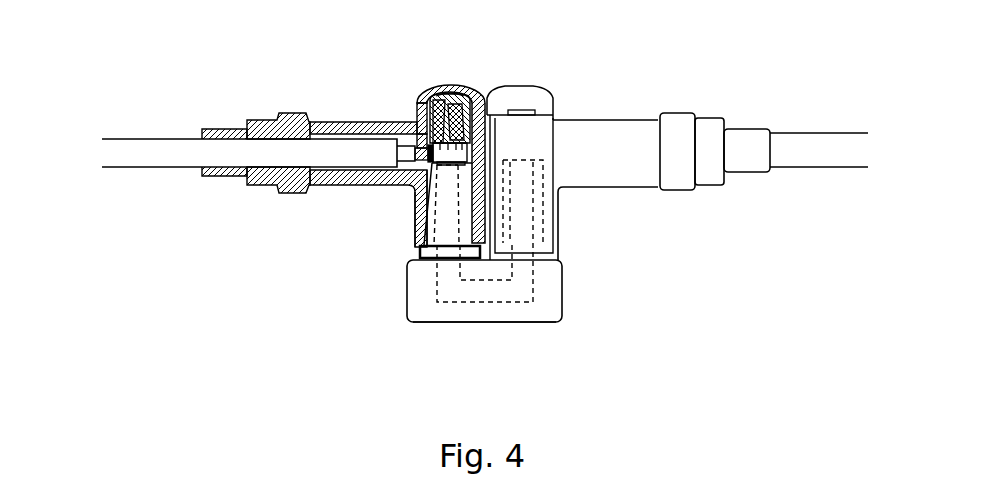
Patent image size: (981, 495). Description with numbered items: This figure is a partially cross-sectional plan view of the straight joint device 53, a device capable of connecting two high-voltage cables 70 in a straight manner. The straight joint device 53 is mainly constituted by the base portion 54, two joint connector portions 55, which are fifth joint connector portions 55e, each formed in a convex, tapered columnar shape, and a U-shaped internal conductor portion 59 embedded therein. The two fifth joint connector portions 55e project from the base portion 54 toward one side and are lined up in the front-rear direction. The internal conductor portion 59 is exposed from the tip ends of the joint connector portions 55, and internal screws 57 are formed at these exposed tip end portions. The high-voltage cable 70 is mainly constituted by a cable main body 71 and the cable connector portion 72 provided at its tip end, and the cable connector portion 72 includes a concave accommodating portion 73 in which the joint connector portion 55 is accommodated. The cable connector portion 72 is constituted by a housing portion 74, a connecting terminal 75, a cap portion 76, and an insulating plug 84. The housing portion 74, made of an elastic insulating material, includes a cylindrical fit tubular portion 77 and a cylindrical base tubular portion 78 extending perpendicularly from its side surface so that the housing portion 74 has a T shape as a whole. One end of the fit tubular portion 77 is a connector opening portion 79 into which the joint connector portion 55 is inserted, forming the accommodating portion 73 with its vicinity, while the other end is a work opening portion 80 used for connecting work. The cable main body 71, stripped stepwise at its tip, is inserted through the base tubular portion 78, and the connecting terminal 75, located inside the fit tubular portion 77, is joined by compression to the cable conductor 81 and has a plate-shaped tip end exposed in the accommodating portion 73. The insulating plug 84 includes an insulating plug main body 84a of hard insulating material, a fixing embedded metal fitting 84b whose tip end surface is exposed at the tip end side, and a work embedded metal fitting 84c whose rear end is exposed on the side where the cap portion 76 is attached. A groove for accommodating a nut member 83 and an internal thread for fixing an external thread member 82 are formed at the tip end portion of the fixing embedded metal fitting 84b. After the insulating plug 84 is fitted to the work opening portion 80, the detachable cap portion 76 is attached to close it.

The high-voltage cable 70 is at (140, 136).
The cable main body 71 is at (163, 146).
The base tubular portion 78 is at (224, 129).
The cable connector portion 72 is at (266, 117).
The housing portion 74 is at (318, 122).
The connecting terminal 75 is at (420, 124).
The cable conductor 81 is at (418, 129).
The cap portion 76 is at (474, 94).
The fit tubular portion 77 is at (493, 105).
The insulating plug 84 is at (433, 90).
The insulating plug main body 84a is at (490, 113).
The fixing embedded metal fitting 84b is at (482, 126).
The work embedded metal fitting 84c is at (450, 90).
The nut member 83 is at (434, 102).
The external thread member 82 is at (449, 94).
The work opening portion 80 is at (462, 98).
The internal screw 57 is at (415, 205).
The accommodating portion 73 is at (417, 228).
The joint connector portion 55 is at (432, 234).
The fifth joint connector portion 55e is at (558, 214).
The connector opening portion 79 is at (430, 258).
The internal conductor portion 59 is at (410, 303).
The straight joint device 53 is at (563, 276).
The base portion 54 is at (563, 300).